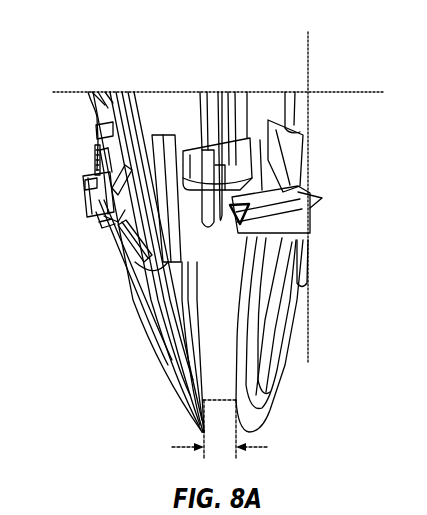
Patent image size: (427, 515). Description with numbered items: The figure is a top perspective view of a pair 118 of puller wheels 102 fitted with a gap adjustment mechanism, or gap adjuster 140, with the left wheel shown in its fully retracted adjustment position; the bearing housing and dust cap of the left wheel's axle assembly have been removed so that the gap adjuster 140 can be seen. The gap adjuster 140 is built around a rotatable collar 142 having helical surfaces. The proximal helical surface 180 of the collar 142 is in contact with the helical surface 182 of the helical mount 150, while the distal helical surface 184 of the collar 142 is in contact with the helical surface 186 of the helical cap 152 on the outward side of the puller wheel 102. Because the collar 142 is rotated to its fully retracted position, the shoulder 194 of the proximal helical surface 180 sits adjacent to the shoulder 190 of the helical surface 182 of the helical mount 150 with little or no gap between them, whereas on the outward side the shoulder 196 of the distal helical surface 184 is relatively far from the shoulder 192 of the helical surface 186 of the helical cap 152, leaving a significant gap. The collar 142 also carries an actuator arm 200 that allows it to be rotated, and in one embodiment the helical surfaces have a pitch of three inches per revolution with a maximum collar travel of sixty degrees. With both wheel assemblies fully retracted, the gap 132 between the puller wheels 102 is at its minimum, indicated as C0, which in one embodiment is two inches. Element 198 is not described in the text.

The puller wheel 102 is at (100, 110).
The pair of puller wheels 118 is at (160, 376).
The gap 132 is at (218, 400).
The gap adjuster 140 is at (165, 108).
The collar 142 is at (203, 100).
The helical mount 150 is at (170, 155).
The helical cap 152 is at (83, 183).
The proximal helical surface 180 is at (330, 152).
The helical surface 182 is at (151, 266).
The distal helical surface 184 is at (97, 218).
The helical surface 186 is at (105, 220).
The shoulder 190 is at (319, 162).
The shoulder 192 is at (92, 178).
The shoulder 194 is at (261, 165).
The shoulder 196 is at (98, 165).
The carrier plate 198 is at (142, 100).
The actuator arm 200 is at (207, 230).
The minimum gap C0 is at (190, 447).